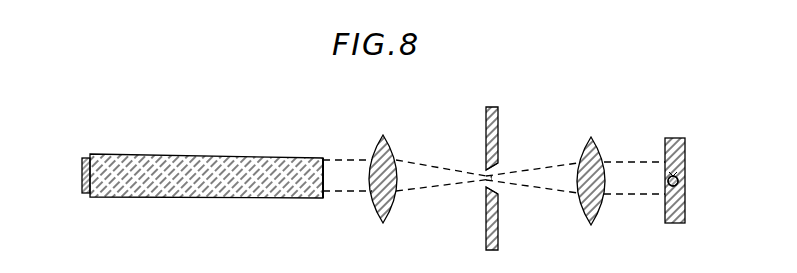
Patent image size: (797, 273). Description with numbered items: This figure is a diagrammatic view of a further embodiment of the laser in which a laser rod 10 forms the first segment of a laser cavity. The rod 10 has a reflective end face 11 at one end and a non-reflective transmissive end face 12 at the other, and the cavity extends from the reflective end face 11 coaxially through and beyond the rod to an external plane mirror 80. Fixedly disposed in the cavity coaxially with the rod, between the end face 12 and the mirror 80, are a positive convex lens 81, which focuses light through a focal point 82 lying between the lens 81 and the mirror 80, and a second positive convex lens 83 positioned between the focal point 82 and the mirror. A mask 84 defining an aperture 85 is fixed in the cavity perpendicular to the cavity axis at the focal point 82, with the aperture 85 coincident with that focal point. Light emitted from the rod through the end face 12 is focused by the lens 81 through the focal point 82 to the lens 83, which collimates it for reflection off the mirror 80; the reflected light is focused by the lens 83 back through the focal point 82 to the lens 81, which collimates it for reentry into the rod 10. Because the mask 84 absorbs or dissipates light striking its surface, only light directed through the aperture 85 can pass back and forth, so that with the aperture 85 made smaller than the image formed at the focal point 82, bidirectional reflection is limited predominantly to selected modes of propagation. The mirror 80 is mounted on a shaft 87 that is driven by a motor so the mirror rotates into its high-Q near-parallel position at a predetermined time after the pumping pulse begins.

The laser rod 10 is at (218, 154).
The reflective end face 11 is at (82, 177).
The non-reflective transmissive end face 12 is at (325, 178).
The external plane mirror 80 is at (676, 224).
The positive convex lens 81 is at (374, 213).
The focal point 82 is at (489, 186).
The second positive convex lens 83 is at (579, 150).
The mask 84 is at (499, 238).
The aperture 85 is at (487, 172).
The shaft 87 is at (680, 181).